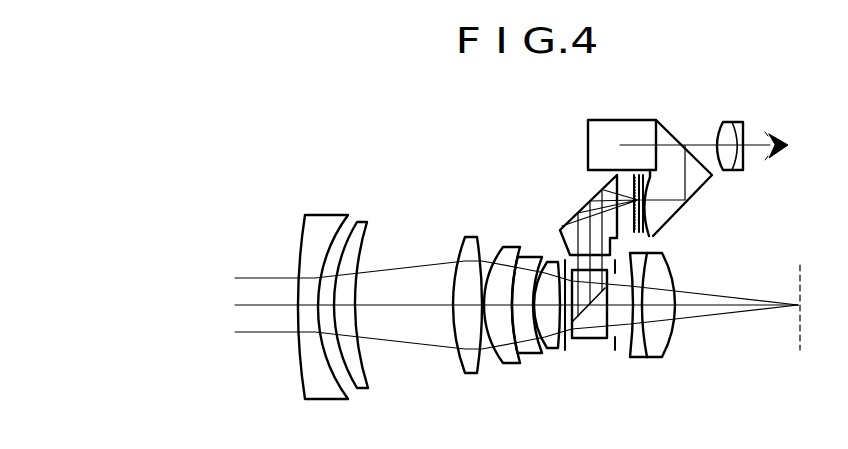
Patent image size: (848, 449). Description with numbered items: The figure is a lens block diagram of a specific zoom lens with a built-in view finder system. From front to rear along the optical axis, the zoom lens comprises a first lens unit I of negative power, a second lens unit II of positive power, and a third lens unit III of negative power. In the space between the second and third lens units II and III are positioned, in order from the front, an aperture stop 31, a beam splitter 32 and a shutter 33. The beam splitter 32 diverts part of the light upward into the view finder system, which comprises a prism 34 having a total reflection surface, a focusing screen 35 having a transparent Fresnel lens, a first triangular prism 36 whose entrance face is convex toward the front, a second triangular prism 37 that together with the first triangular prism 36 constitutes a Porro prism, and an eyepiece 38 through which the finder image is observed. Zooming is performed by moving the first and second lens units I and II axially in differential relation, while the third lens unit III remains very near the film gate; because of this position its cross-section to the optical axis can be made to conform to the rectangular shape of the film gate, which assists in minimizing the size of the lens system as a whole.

The first lens unit I is at (299, 405).
The second lens unit II is at (555, 377).
The third lens unit III is at (625, 383).
The aperture stop 31 is at (571, 352).
The beam splitter 32 is at (589, 340).
The shutter 33 is at (615, 352).
The prism 34 is at (558, 228).
The focusing screen 35 is at (641, 234).
The first triangular prism 36 is at (712, 180).
The second triangular prism 37 is at (600, 119).
The eyepiece 38 is at (725, 121).